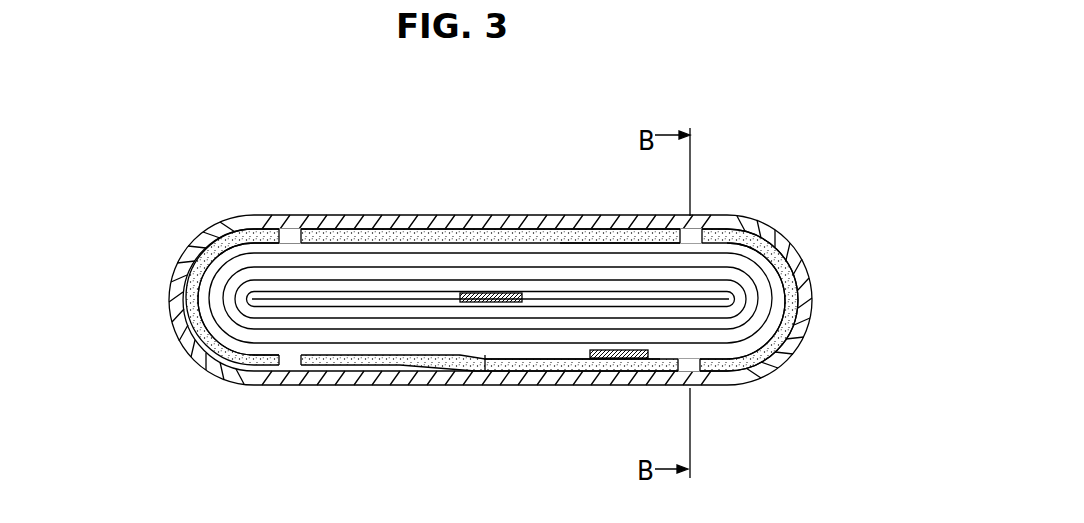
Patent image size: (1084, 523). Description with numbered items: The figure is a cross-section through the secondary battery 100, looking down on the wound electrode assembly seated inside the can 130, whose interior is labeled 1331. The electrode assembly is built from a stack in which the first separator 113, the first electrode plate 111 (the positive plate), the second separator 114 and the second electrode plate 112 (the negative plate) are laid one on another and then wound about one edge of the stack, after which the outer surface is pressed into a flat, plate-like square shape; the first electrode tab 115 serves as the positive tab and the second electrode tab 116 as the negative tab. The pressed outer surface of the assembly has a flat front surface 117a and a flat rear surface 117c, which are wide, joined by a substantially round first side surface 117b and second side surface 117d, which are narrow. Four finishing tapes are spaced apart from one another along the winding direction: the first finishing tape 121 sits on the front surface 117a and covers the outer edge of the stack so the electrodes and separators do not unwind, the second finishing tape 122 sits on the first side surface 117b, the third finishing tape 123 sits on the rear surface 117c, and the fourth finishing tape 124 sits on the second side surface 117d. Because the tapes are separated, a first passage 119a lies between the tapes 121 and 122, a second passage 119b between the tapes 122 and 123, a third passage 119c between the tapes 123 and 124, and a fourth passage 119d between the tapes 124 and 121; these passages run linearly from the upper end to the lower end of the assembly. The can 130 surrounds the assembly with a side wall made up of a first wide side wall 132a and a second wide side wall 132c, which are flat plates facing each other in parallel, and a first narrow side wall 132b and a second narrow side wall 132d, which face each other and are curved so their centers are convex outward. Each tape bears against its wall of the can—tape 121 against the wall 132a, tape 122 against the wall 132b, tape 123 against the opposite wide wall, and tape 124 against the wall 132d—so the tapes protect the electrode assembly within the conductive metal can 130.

The secondary battery 100 is at (110, 150).
The can 130 is at (168, 234).
The inner surface of case 1331 is at (238, 246).
The first wide side wall 132a is at (410, 387).
The first narrow side wall 132b is at (175, 282).
The second wide side wall 132c is at (517, 220).
The second narrow side wall 132d is at (810, 282).
The third finishing tape 123 is at (586, 232).
The second finishing tape 122 is at (183, 300).
The fourth finishing tape 124 is at (793, 313).
The first finishing tape 121 is at (487, 368).
The front surface 117a is at (546, 370).
The first side surface 117b is at (192, 358).
The rear surface 117c is at (643, 240).
The second side surface 117d is at (788, 350).
The first passage 119a is at (290, 383).
The second passage 119b is at (288, 222).
The third passage 119c is at (702, 218).
The fourth passage 119d is at (701, 387).
The first electrode plate 111 is at (406, 260).
The second electrode plate 112 is at (330, 283).
The first separator 113 is at (437, 250).
The second separator 114 is at (353, 272).
The first electrode tab 115 is at (608, 358).
The second electrode tab 116 is at (470, 293).